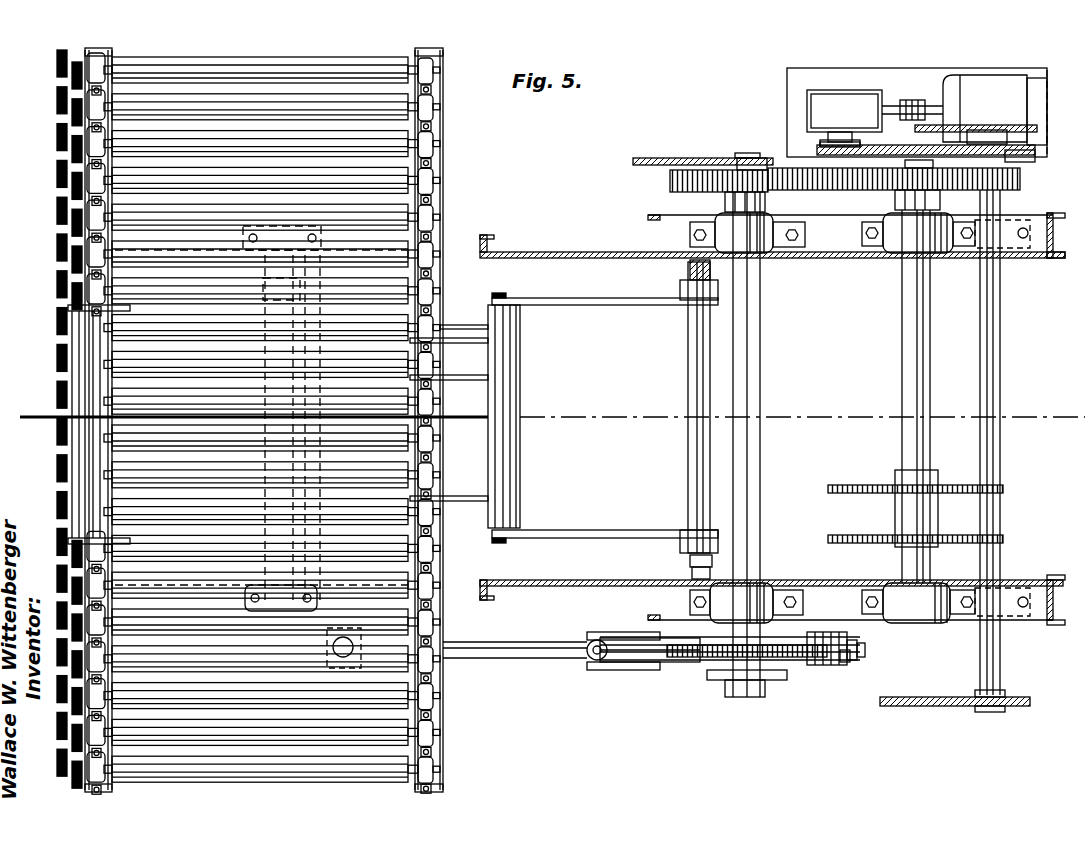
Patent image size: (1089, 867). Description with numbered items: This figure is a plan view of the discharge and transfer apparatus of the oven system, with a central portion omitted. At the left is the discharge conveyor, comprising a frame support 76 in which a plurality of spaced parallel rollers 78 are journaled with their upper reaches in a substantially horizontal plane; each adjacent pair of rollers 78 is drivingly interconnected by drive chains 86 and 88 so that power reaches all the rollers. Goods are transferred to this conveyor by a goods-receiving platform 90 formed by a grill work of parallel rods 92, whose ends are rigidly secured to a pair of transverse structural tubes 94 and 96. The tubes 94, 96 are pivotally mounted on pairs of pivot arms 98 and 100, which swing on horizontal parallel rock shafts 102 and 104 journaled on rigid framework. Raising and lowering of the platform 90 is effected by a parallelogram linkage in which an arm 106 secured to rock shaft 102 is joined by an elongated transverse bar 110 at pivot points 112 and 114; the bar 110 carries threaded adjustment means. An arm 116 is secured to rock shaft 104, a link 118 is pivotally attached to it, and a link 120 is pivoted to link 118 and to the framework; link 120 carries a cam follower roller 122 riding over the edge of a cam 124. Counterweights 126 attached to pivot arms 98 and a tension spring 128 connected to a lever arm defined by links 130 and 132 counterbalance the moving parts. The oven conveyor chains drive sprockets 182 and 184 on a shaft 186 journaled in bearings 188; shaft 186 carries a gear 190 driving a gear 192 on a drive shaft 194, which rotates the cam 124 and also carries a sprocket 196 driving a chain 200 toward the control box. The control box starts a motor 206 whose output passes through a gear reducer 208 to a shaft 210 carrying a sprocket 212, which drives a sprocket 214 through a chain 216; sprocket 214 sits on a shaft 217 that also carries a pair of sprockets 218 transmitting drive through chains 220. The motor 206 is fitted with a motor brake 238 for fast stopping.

The frame support 76 is at (448, 222).
The rollers 78 is at (395, 173).
The drive chain 86 is at (60, 222).
The drive chain 88 is at (57, 96).
The goods-receiving platform 90 is at (450, 326).
The rods 92 is at (484, 375).
The transverse structural tube 94 is at (74, 377).
The transverse structural tube 96 is at (512, 366).
The pivot arms 98 is at (100, 307).
The pivot arms 100 is at (586, 304).
The rock shaft 102 is at (300, 490).
The rock shaft 104 is at (700, 468).
The parallel arm 106 is at (262, 640).
The elongated transverse bar 110 is at (490, 646).
The pivot point 112 is at (345, 643).
The pivot point 114 is at (660, 588).
The arm 116 is at (684, 667).
The link 118 is at (802, 638).
The link 120 is at (855, 682).
The cam follower roller 122 is at (850, 660).
The cam 124 is at (713, 682).
The counterweights 126 is at (438, 282).
The tension spring 128 is at (590, 644).
The link 130 is at (628, 636).
The link 132 is at (602, 632).
The sprocket 182 is at (860, 485).
The sprocket 184 is at (868, 535).
The shaft 186 is at (926, 375).
The bearings 188 is at (903, 243).
The gear 190 is at (880, 182).
The gear 192 is at (668, 184).
The drive shaft 194 is at (757, 306).
The sprocket 196 is at (738, 158).
The chain 200 is at (660, 138).
The motor 206 is at (975, 88).
The gear reducer 208 is at (828, 100).
The shaft 210 is at (844, 140).
The sprocket 212 is at (818, 148).
The sprocket 214 is at (1020, 160).
The chain 216 is at (895, 142).
The shaft 217 is at (1002, 210).
The sprockets 218 is at (977, 125).
The chains 220 is at (932, 145).
The motor brake 238 is at (1035, 95).